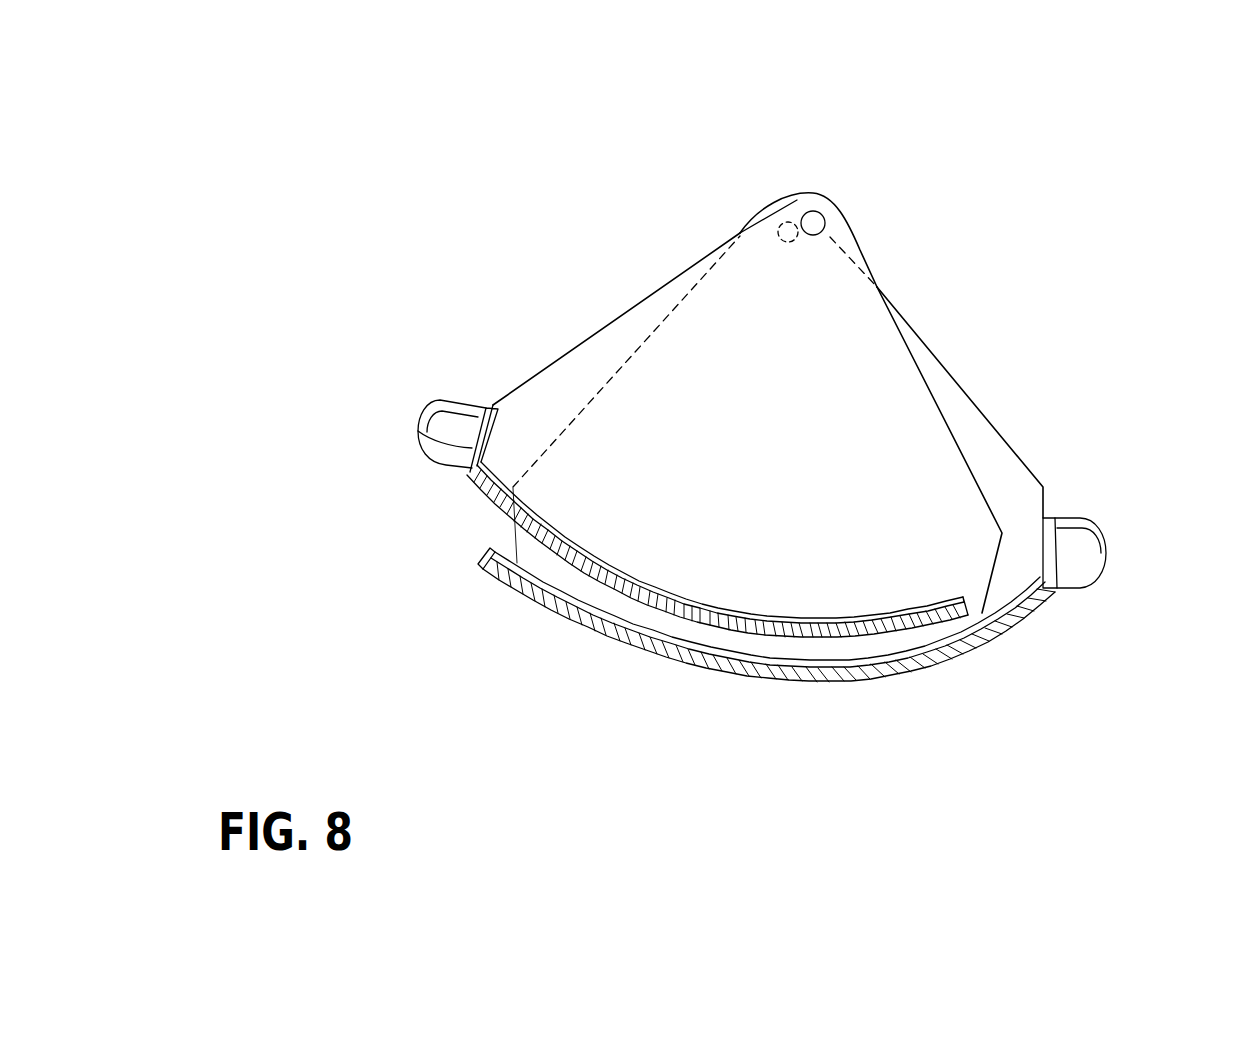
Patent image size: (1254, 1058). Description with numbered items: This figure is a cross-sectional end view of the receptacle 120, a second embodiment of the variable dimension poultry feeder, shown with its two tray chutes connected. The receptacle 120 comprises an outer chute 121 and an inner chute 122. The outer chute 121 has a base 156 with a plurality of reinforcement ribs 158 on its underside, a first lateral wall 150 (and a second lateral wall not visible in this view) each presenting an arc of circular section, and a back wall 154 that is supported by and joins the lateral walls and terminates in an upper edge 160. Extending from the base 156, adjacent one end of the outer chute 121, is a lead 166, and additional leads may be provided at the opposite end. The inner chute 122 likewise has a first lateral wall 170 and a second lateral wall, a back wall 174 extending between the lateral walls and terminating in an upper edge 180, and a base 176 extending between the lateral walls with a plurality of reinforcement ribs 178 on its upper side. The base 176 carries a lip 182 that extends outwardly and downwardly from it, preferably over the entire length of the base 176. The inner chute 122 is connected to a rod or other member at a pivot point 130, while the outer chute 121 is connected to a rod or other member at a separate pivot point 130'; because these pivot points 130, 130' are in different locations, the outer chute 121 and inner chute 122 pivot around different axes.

The receptacle 120 is at (932, 212).
The outer chute 121 is at (947, 367).
The inner chute 122 is at (617, 313).
The pivot point 130 is at (838, 165).
The pivot point 130' is at (720, 200).
The first lateral wall 150 is at (983, 457).
The back wall 154 is at (1060, 550).
The base 156 is at (770, 660).
The reinforcement ribs 158 is at (697, 667).
The upper edge 160 is at (1047, 515).
The lead 166 is at (493, 557).
The first lateral wall 170 is at (548, 390).
The back wall 174 is at (418, 430).
The base 176 is at (513, 488).
The reinforcement ribs 178 is at (645, 585).
The upper edge 180 is at (493, 405).
The lip 182 is at (967, 612).